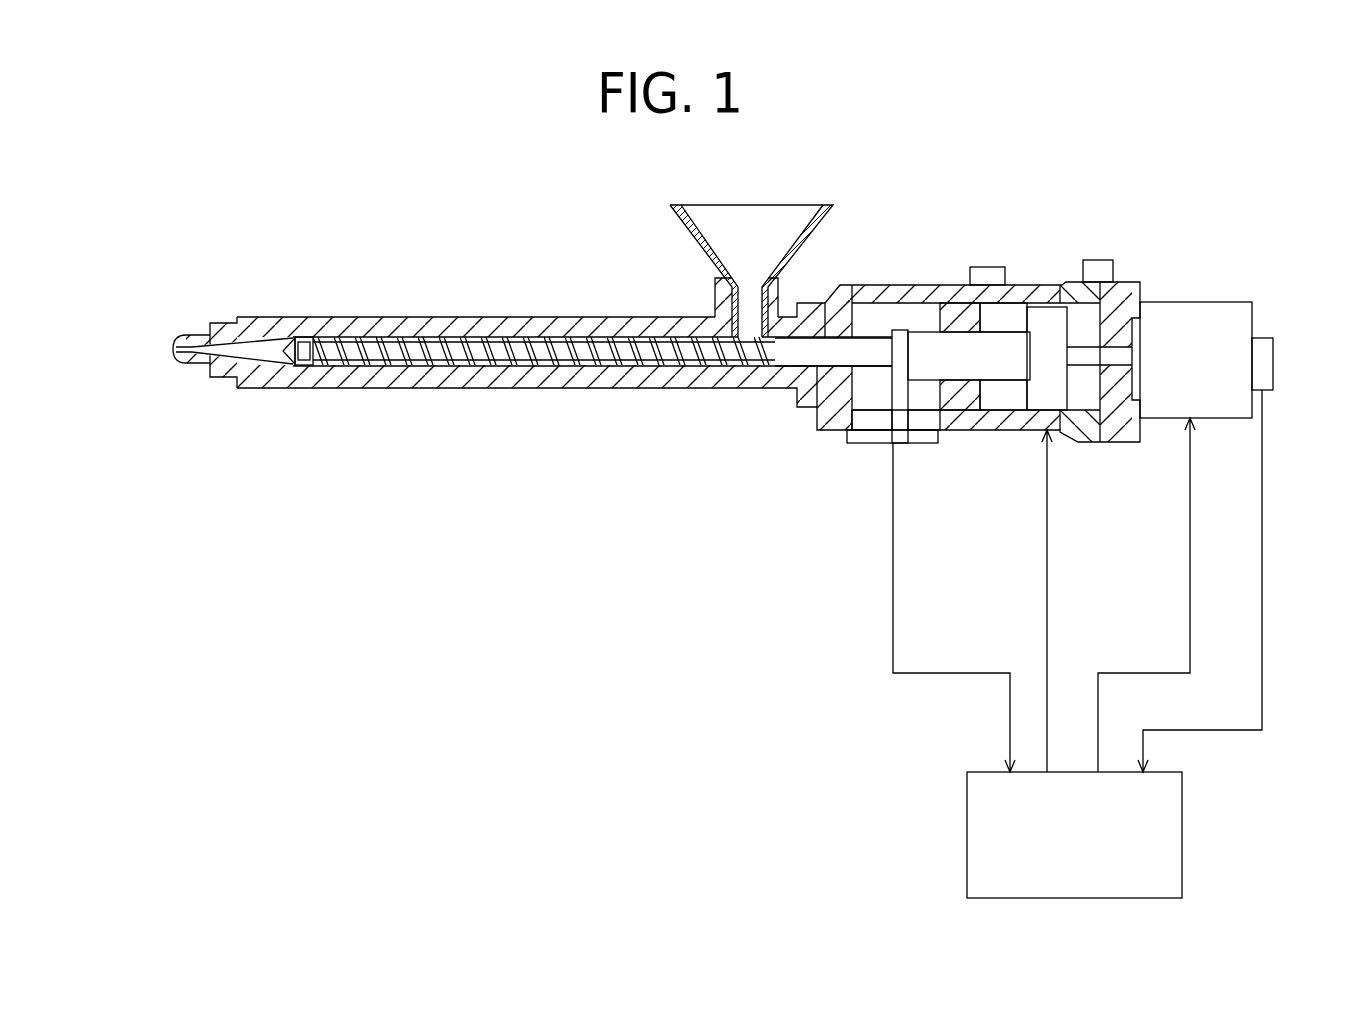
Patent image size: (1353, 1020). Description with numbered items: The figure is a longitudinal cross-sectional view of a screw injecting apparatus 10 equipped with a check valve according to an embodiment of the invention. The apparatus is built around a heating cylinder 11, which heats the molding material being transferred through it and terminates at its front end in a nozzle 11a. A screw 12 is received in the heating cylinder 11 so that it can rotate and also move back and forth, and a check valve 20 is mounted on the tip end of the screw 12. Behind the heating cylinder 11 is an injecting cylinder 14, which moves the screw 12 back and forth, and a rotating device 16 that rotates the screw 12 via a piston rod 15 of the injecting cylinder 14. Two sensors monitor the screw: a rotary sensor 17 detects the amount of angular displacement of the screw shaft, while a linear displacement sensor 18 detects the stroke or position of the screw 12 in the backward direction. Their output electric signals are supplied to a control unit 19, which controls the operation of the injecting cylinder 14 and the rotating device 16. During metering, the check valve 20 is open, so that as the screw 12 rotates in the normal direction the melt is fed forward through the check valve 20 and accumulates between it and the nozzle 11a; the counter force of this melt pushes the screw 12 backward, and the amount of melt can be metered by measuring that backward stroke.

The screw injecting apparatus 10 is at (1108, 152).
The heating cylinder 11 is at (648, 388).
The nozzle 11a is at (183, 364).
The screw 12 is at (498, 388).
The injecting cylinder 14 is at (1033, 302).
The piston rod 15 is at (997, 292).
The rotating device 16 is at (1198, 300).
The rotary sensor 17 is at (1265, 338).
The linear displacement sensor 18 is at (870, 443).
The control unit 19 is at (1182, 848).
The check valve 20 is at (303, 336).